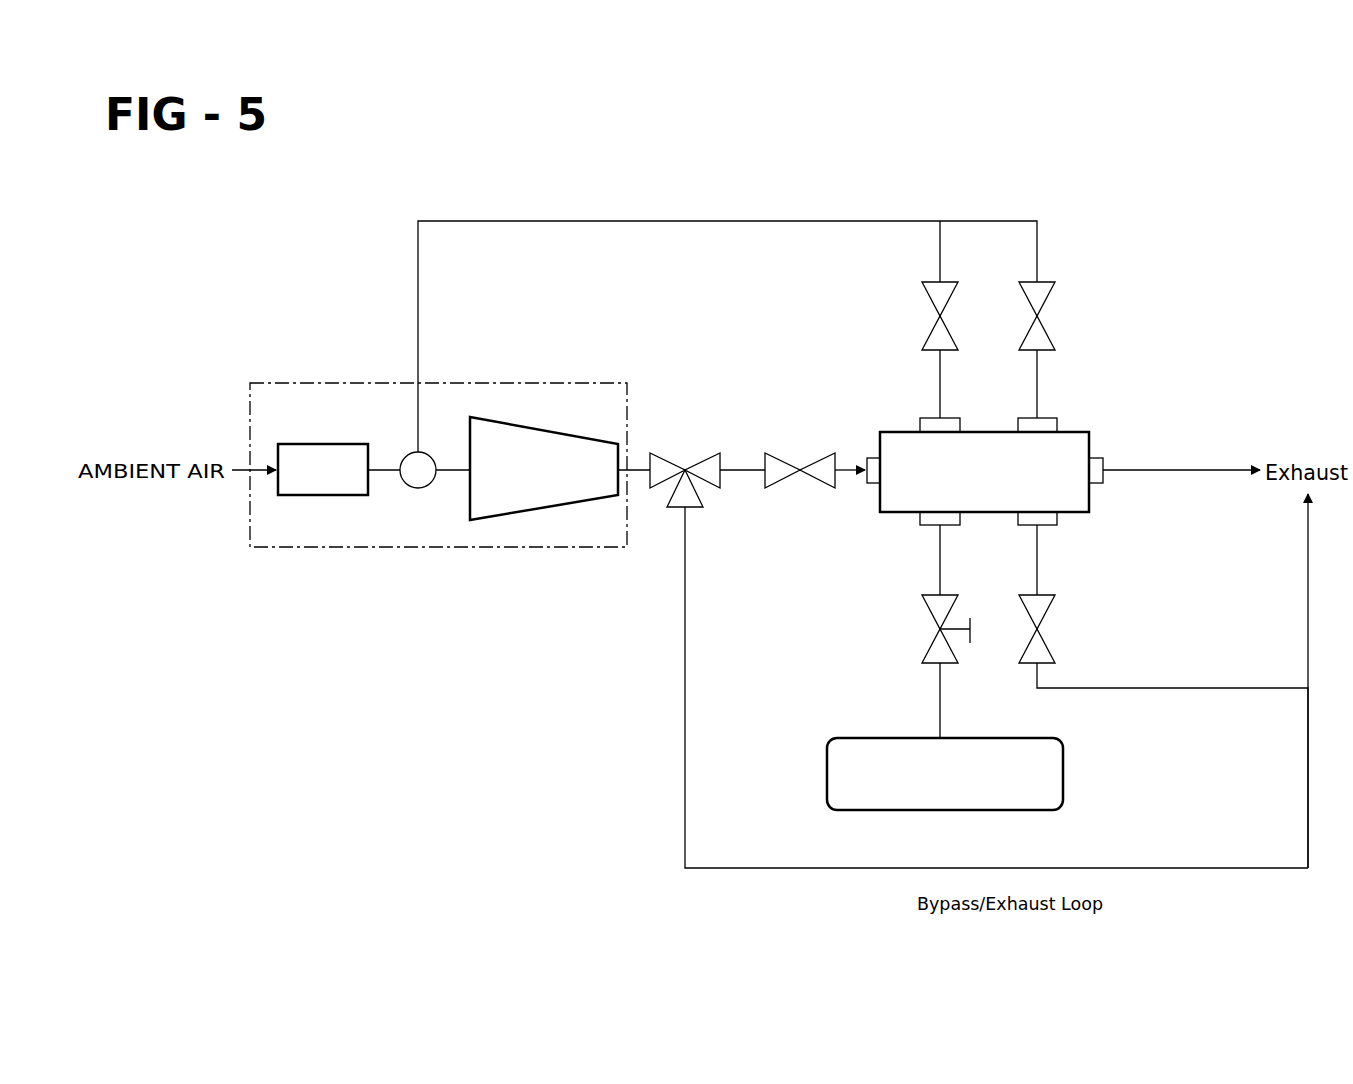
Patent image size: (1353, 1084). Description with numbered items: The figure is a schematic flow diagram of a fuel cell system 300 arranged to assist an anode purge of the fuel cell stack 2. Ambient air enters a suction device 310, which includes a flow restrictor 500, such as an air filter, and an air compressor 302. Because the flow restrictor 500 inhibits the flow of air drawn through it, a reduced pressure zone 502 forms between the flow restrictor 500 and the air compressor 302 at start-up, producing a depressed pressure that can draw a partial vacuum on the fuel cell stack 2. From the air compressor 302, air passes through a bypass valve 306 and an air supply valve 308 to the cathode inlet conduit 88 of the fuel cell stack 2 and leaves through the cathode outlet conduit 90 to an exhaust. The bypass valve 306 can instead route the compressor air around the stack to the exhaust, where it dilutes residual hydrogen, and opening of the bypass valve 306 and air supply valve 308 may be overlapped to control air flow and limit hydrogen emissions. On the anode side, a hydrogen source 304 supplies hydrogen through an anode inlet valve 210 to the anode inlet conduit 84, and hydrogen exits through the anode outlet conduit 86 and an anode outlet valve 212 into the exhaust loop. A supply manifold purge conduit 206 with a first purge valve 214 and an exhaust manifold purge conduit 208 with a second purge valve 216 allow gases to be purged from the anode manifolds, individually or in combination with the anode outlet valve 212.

The fuel cell stack 2 is at (1090, 447).
The anode inlet conduit 84 is at (918, 518).
The anode outlet conduit 86 is at (1060, 516).
The cathode inlet conduit 88 is at (876, 488).
The cathode outlet conduit 90 is at (1097, 485).
The supply manifold purge conduit 206 is at (920, 425).
The exhaust manifold purge conduit 208 is at (1058, 424).
The anode inlet valve 210 is at (930, 645).
The anode outlet valve 212 is at (1048, 649).
The first purge valve 214 is at (930, 297).
The second purge valve 216 is at (1047, 292).
The fuel cell system 300 is at (1138, 247).
The air compressor 302 is at (528, 422).
The hydrogen source 304 is at (955, 810).
The bypass valve 306 is at (680, 508).
The air supply valve 308 is at (799, 466).
The suction device 310 is at (320, 548).
The flow restrictor 500 is at (305, 444).
The reduced pressure zone 502 is at (418, 488).